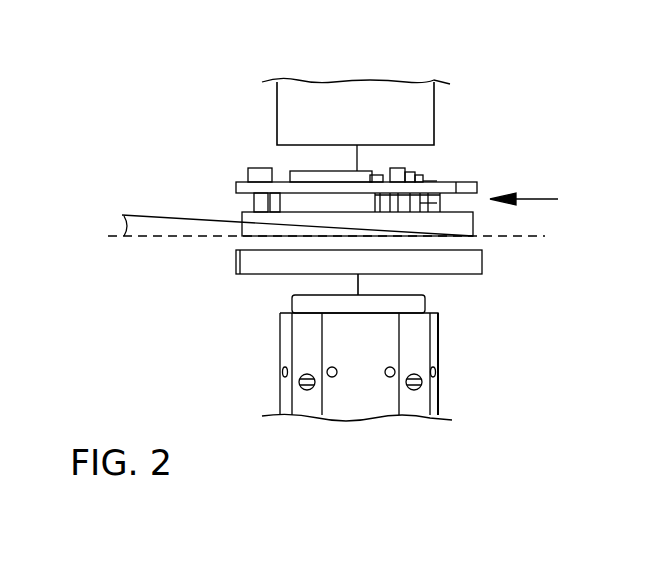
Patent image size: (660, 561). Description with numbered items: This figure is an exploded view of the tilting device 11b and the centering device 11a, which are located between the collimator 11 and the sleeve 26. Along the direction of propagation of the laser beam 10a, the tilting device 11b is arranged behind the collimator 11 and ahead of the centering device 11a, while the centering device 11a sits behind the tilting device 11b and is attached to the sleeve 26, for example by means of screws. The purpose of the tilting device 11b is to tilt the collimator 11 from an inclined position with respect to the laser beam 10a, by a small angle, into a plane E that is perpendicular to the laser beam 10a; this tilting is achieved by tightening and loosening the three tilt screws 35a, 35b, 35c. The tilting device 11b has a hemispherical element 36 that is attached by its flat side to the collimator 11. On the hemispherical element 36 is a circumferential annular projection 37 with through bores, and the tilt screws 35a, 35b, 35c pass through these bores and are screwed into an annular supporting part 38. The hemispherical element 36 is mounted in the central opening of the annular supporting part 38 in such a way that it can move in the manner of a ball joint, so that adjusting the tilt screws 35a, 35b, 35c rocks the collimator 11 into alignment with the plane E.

The collimator 11 is at (308, 103).
The centering device 11a is at (250, 259).
The tilting device 11b is at (547, 200).
The laser beam 10a is at (358, 284).
The sleeve 26 is at (403, 296).
The tilt screw 35a is at (260, 175).
The tilt screw 35b is at (378, 178).
The tilt screw 35c is at (400, 167).
The hemispherical element 36 is at (297, 207).
The circumferential annular projection 37 is at (278, 188).
The annular supporting part 38 is at (459, 221).
The plane E is at (518, 236).